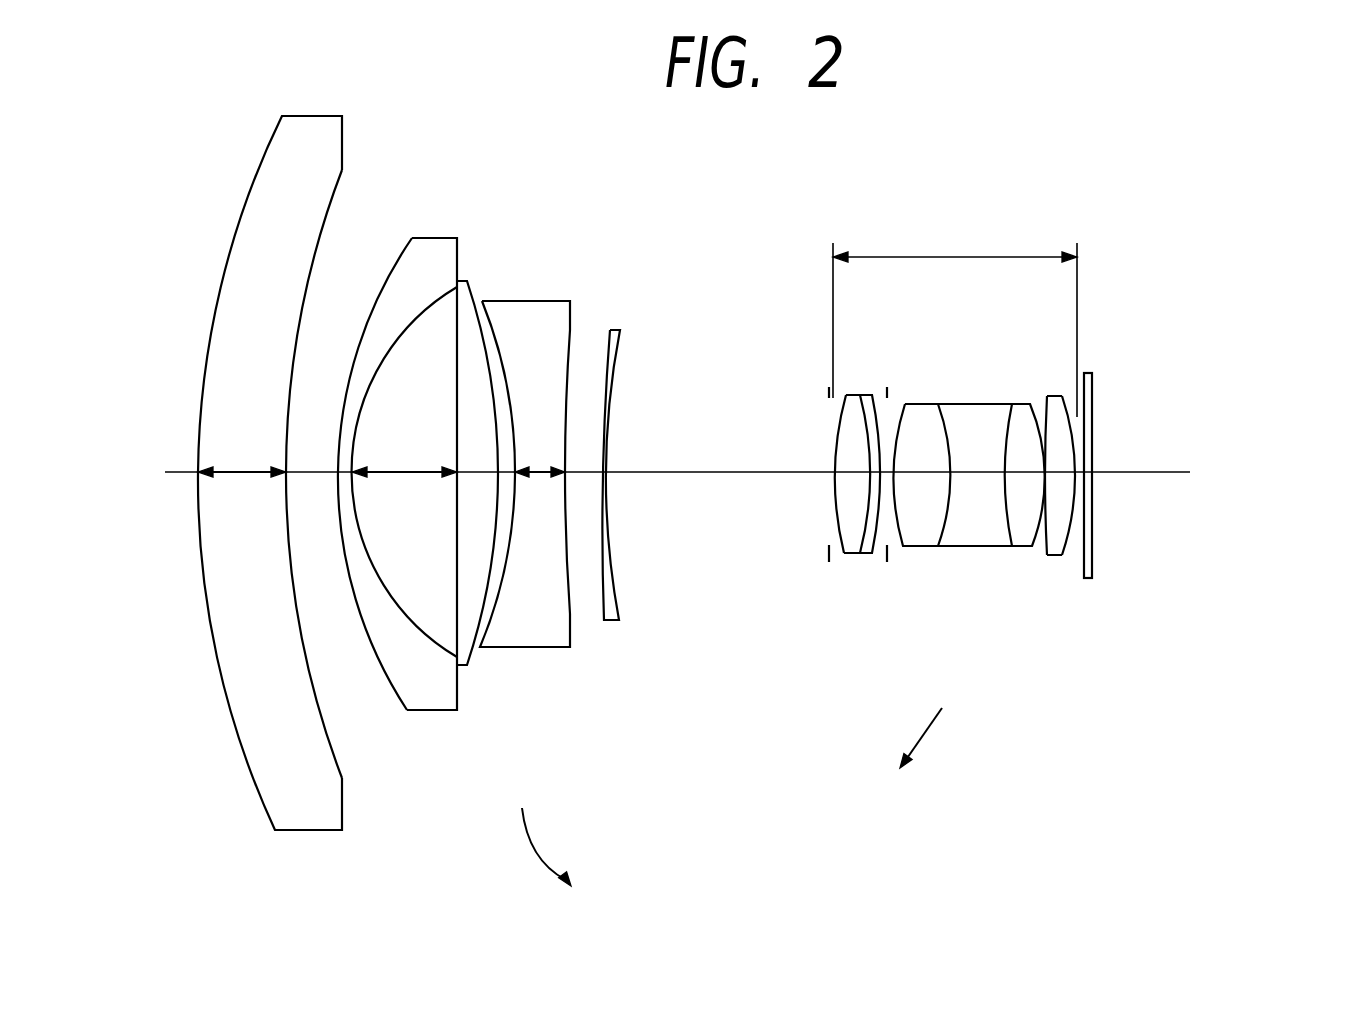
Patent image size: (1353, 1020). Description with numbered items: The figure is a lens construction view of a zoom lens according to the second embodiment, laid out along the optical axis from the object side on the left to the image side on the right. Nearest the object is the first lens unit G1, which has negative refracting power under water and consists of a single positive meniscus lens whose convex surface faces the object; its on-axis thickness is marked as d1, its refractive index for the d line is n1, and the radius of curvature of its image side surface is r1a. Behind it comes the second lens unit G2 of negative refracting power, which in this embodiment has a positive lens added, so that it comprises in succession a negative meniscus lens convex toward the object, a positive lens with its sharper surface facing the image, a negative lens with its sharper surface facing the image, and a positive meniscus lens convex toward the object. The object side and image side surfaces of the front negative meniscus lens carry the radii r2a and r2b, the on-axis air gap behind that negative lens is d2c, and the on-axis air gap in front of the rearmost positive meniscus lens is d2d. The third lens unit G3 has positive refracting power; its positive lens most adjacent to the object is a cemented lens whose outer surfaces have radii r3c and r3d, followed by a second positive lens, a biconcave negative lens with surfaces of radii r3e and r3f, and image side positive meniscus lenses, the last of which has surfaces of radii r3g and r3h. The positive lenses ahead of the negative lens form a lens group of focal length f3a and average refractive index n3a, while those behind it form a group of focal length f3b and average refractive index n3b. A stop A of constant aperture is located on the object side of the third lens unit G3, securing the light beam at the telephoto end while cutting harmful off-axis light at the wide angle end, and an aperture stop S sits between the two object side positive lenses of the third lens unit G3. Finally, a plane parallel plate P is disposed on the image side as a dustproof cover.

The first lens unit G1 is at (308, 521).
The refractive index of first lens unit lens n1 is at (308, 473).
The radius of curvature of image side surface of first lens unit lens r1a is at (341, 183).
The on-axis thickness of first lens unit lens d1 is at (242, 459).
The second lens unit G2 is at (484, 558).
The radius of curvature of object side surface of second lens unit negative lens r2a is at (372, 305).
The radius of curvature of image side surface of second lens unit negative lens r2b is at (413, 322).
The on-axis air gap behind second lens unit front negative lens d2c is at (404, 459).
The on-axis air gap before second lens unit positive meniscus lens d2d is at (542, 459).
The third lens unit G3 is at (959, 492).
The stop A is at (827, 557).
The aperture stop S is at (885, 557).
The focal length of object side positive lens unit of third lens unit f3a is at (845, 444).
The focal length of image side positive lens unit of third lens unit f3b is at (1083, 478).
The radius of curvature of object side surface of third lens unit front positive len r3c is at (839, 420).
The radius of curvature of image side surface of third lens unit front positive lens r3d is at (868, 428).
The radius of curvature of object side surface of third lens unit negative lens r3e is at (949, 421).
The radius of curvature of image side surface of third lens unit negative lens r3f is at (1004, 488).
The radius of curvature of object side surface of third lens unit rear positive lens r3g is at (1047, 520).
The radius of curvature of image side surface of third lens unit rear positive lens r3h is at (1068, 532).
The average refractive index of object side positive lenses of third lens unit n3a is at (945, 509).
The average refractive index of image side positive lenses of third lens unit n3b is at (1083, 508).
The plane parallel plate P is at (1095, 388).